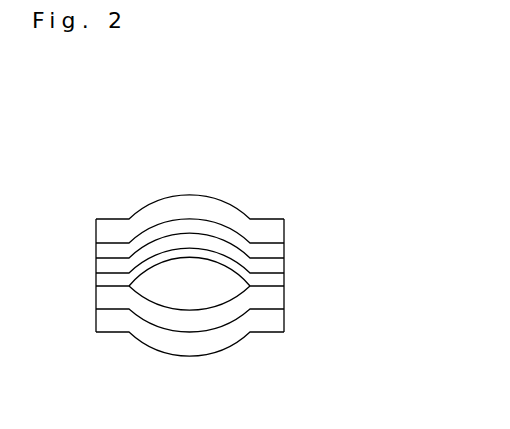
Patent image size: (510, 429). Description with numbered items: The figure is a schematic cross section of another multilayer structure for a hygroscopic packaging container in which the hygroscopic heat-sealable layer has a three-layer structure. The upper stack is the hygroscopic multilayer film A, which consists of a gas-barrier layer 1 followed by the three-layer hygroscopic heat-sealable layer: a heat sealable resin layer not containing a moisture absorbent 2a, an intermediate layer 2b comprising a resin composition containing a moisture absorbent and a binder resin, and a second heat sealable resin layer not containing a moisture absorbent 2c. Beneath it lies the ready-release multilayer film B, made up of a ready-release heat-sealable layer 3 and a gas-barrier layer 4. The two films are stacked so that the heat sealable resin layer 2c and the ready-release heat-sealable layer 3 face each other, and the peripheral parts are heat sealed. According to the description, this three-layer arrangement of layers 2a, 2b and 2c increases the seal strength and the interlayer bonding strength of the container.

The gas-barrier layer 1 is at (287, 224).
The heat sealable resin layer not containing a moisture absorbent 2a is at (287, 250).
The intermediate layer 2b is at (287, 265).
The heat sealable resin layer not containing a moisture absorbent 2c is at (222, 279).
The ready-release heat-sealable layer 3 is at (287, 298).
The gas-barrier layer 4 is at (287, 328).
The hygroscopic multilayer film A is at (249, 243).
The ready-release multilayer film B is at (249, 327).